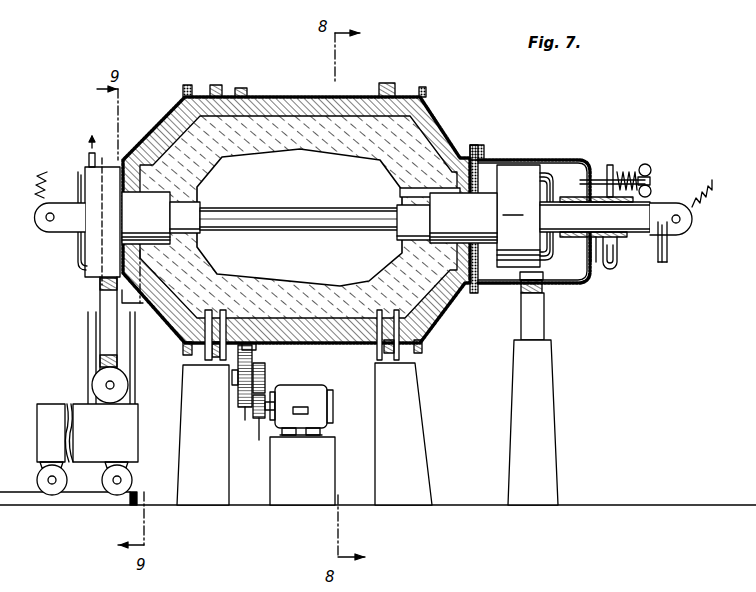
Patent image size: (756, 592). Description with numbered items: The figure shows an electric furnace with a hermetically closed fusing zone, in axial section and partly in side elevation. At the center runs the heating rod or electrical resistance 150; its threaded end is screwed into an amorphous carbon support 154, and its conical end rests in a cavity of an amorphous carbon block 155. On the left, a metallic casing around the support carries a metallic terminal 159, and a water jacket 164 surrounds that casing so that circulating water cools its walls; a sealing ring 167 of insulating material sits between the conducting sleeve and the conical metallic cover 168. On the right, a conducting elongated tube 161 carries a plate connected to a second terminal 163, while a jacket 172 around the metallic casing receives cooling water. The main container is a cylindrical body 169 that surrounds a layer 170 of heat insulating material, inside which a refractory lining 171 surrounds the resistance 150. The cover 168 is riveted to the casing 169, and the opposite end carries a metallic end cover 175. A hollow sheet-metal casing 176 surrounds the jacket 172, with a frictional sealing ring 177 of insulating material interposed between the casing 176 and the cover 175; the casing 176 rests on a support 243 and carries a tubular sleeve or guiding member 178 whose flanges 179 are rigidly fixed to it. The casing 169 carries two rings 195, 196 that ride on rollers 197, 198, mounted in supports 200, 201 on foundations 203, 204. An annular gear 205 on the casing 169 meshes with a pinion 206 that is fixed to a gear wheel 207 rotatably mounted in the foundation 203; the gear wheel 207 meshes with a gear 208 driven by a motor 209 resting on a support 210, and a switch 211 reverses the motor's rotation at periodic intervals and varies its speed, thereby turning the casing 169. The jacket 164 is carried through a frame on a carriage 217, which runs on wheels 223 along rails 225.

The heating rod 150 is at (322, 213).
The support 154 is at (163, 202).
The block 155 is at (435, 199).
The metallic terminal 159 is at (58, 202).
The elongated tube 161 is at (644, 200).
The terminal 163 is at (688, 217).
The water jacket 164 is at (93, 240).
The sealing ring 167 is at (123, 160).
The metallic cover 168 is at (158, 306).
The cylindrical body 169 is at (297, 97).
The layer 170 is at (342, 100).
The lining 171 is at (406, 108).
The jacket 172 is at (522, 173).
The metallic end cover 175 is at (429, 317).
The hollow casing 176 is at (556, 285).
The frictional sealing ring 177 is at (478, 143).
The tubular sleeve 178 is at (618, 243).
The flanges 179 is at (604, 268).
The ring 195 is at (218, 85).
The ring 196 is at (387, 83).
The roller 197 is at (200, 363).
The roller 198 is at (376, 357).
The support 200 is at (203, 355).
The support 201 is at (409, 357).
The foundation 203 is at (187, 436).
The foundation 204 is at (418, 440).
The annular gear 205 is at (254, 347).
The pinion 206 is at (272, 423).
The gear wheel 207 is at (267, 377).
The gear 208 is at (270, 440).
The motor 209 is at (317, 395).
The support 210 is at (330, 474).
The switch 211 is at (310, 412).
The carriage 217 is at (133, 420).
The wheel 223 is at (130, 482).
The rail 225 is at (75, 498).
The support 243 is at (540, 388).